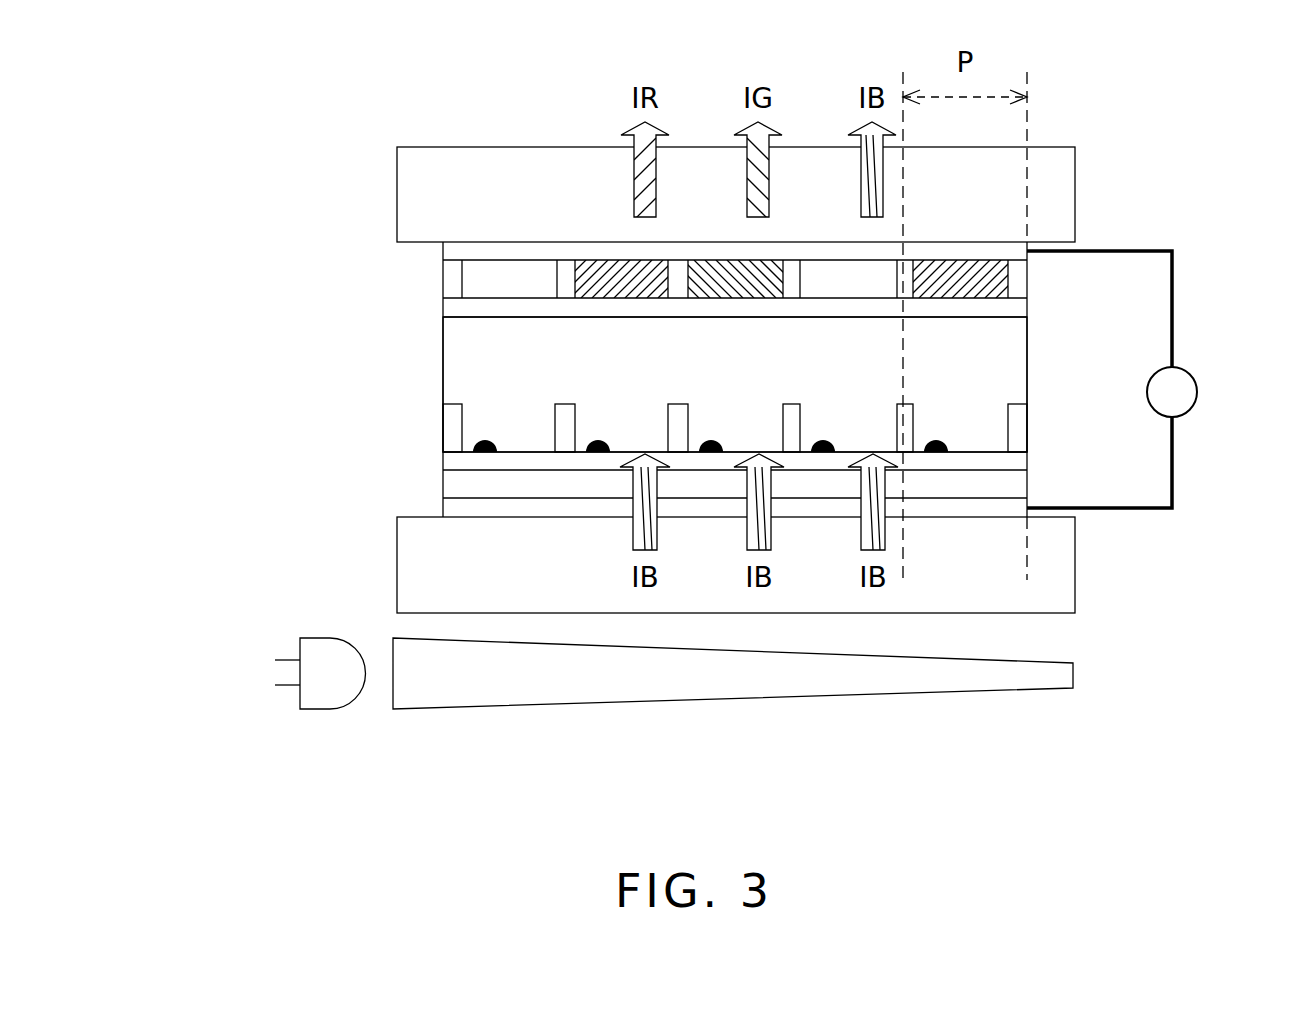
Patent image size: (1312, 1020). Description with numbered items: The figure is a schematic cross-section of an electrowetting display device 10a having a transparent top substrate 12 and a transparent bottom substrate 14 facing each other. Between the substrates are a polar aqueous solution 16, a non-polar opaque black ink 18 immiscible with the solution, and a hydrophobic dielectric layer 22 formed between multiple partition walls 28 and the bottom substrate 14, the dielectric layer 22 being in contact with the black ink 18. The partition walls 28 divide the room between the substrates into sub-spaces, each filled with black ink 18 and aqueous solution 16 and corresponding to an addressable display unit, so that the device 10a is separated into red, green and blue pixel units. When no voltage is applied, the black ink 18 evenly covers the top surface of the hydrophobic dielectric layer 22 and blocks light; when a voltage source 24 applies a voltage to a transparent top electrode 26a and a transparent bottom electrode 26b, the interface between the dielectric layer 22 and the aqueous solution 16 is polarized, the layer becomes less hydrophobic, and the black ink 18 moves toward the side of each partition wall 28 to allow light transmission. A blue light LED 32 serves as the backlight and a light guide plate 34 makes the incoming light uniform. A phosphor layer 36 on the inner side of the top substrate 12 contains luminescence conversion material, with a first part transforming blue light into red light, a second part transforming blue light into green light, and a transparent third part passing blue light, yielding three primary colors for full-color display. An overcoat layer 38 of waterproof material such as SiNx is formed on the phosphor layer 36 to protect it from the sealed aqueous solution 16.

The electrowetting display device 10a is at (158, 93).
The transparent top substrate 12 is at (418, 203).
The transparent bottom substrate 14 is at (410, 562).
The polar aqueous solution 16 is at (480, 385).
The black ink 18 is at (598, 445).
The hydrophobic dielectric layer 22 is at (452, 463).
The voltage source 24 is at (1188, 370).
The transparent top electrode 26a is at (455, 250).
The transparent bottom electrode 26b is at (455, 512).
The partition walls 28 is at (452, 428).
The blue light LED 32 is at (322, 697).
The light guide plate 34 is at (585, 686).
The phosphor layer 36 is at (598, 262).
The overcoat layer 38 is at (452, 298).